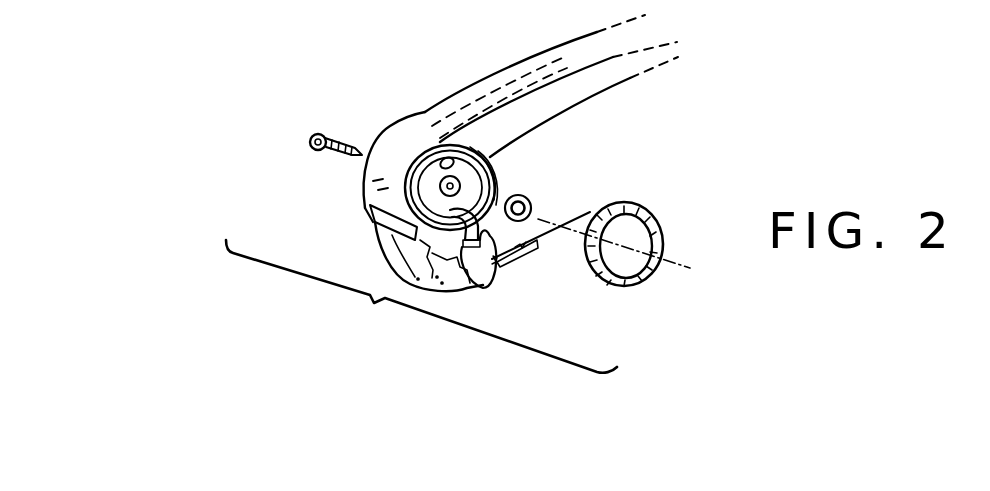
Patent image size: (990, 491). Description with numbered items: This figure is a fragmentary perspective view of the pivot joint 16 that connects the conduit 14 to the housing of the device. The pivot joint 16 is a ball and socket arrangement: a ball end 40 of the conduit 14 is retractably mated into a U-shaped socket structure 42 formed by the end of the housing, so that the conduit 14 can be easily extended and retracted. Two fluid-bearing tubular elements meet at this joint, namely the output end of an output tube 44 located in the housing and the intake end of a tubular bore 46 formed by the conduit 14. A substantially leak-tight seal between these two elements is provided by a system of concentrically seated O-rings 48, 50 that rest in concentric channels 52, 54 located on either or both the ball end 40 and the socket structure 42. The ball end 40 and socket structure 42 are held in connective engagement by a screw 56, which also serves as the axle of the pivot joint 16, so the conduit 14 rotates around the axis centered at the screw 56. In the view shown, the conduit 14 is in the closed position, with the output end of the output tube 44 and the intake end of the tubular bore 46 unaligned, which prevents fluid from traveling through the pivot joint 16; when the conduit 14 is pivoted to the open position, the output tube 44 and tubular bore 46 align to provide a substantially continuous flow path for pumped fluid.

The conduit 14 is at (505, 68).
The pivot joint 16 is at (421, 306).
The ball end 40 is at (364, 196).
The socket structure 42 is at (378, 244).
The output tube 44 is at (496, 265).
The tubular bore 46 is at (433, 134).
The O-ring 48 is at (531, 203).
The O-ring 50 is at (637, 207).
The channel 52 is at (462, 180).
The channel 54 is at (493, 179).
The screw 56 is at (333, 132).